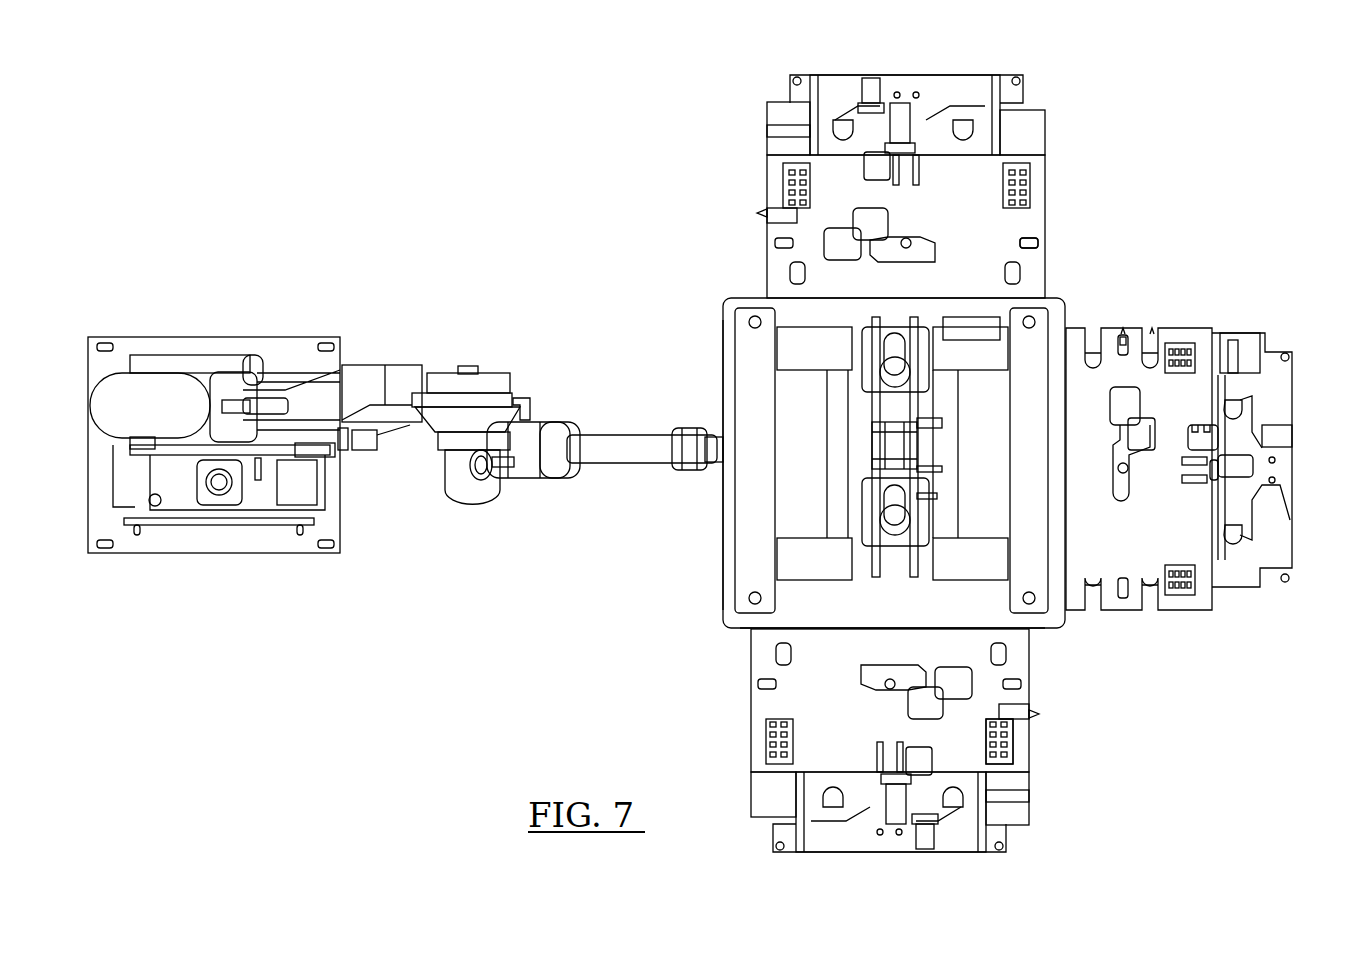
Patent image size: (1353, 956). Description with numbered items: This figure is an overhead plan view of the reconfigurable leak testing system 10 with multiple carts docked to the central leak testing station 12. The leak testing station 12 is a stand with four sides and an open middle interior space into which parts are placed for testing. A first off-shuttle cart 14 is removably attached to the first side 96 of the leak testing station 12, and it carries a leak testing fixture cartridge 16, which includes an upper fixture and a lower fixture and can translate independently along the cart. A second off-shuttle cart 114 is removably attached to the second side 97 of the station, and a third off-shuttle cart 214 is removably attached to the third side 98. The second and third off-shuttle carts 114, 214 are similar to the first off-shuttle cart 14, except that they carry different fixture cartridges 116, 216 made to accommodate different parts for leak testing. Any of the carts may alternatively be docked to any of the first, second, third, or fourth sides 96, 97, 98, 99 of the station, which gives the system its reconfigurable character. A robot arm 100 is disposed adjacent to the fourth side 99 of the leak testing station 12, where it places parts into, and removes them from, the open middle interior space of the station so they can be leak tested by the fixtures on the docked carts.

The reconfigurable leak testing system 10 is at (1176, 182).
The leak testing station 12 is at (716, 306).
The off-shuttle cart 14 is at (1038, 742).
The leak testing fixture cartridge 16 is at (810, 717).
The first side 96 is at (745, 628).
The second side 97 is at (1067, 318).
The third side 98 is at (747, 300).
The fourth side 99 is at (720, 605).
The robot arm 100 is at (368, 385).
The second off-shuttle cart 114 is at (1293, 336).
The fixture cartridge 116 is at (1158, 390).
The third off-shuttle cart 214 is at (983, 62).
The fixture cartridge 216 is at (978, 212).